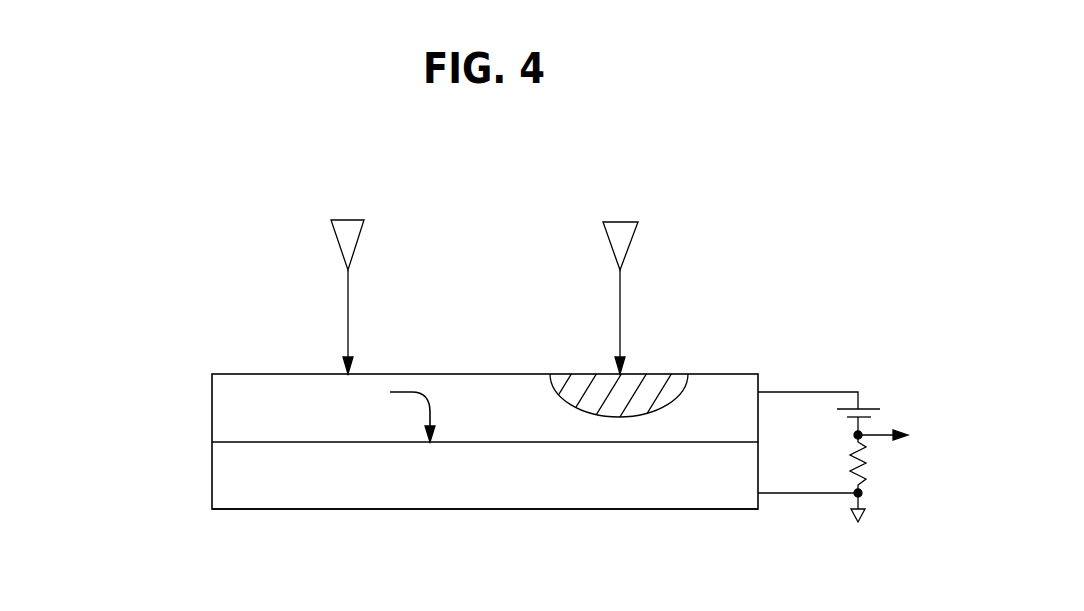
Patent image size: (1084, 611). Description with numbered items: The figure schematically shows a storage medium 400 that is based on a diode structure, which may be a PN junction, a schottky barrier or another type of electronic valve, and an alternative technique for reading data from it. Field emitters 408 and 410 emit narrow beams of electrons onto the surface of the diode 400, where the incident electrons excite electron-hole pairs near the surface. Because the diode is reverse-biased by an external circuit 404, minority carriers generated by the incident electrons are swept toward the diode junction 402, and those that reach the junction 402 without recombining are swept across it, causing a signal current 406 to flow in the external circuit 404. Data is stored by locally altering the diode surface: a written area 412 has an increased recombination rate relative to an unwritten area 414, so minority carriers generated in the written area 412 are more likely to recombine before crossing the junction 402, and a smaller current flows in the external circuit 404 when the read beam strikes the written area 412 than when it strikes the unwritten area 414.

The storage medium 400 is at (185, 373).
The diode junction 402 is at (323, 442).
The external circuit 404 is at (866, 407).
The signal current 406 is at (875, 437).
The field emitter 408 is at (356, 220).
The field emitter 410 is at (630, 222).
The written area 412 is at (673, 374).
The unwritten area 414 is at (381, 374).